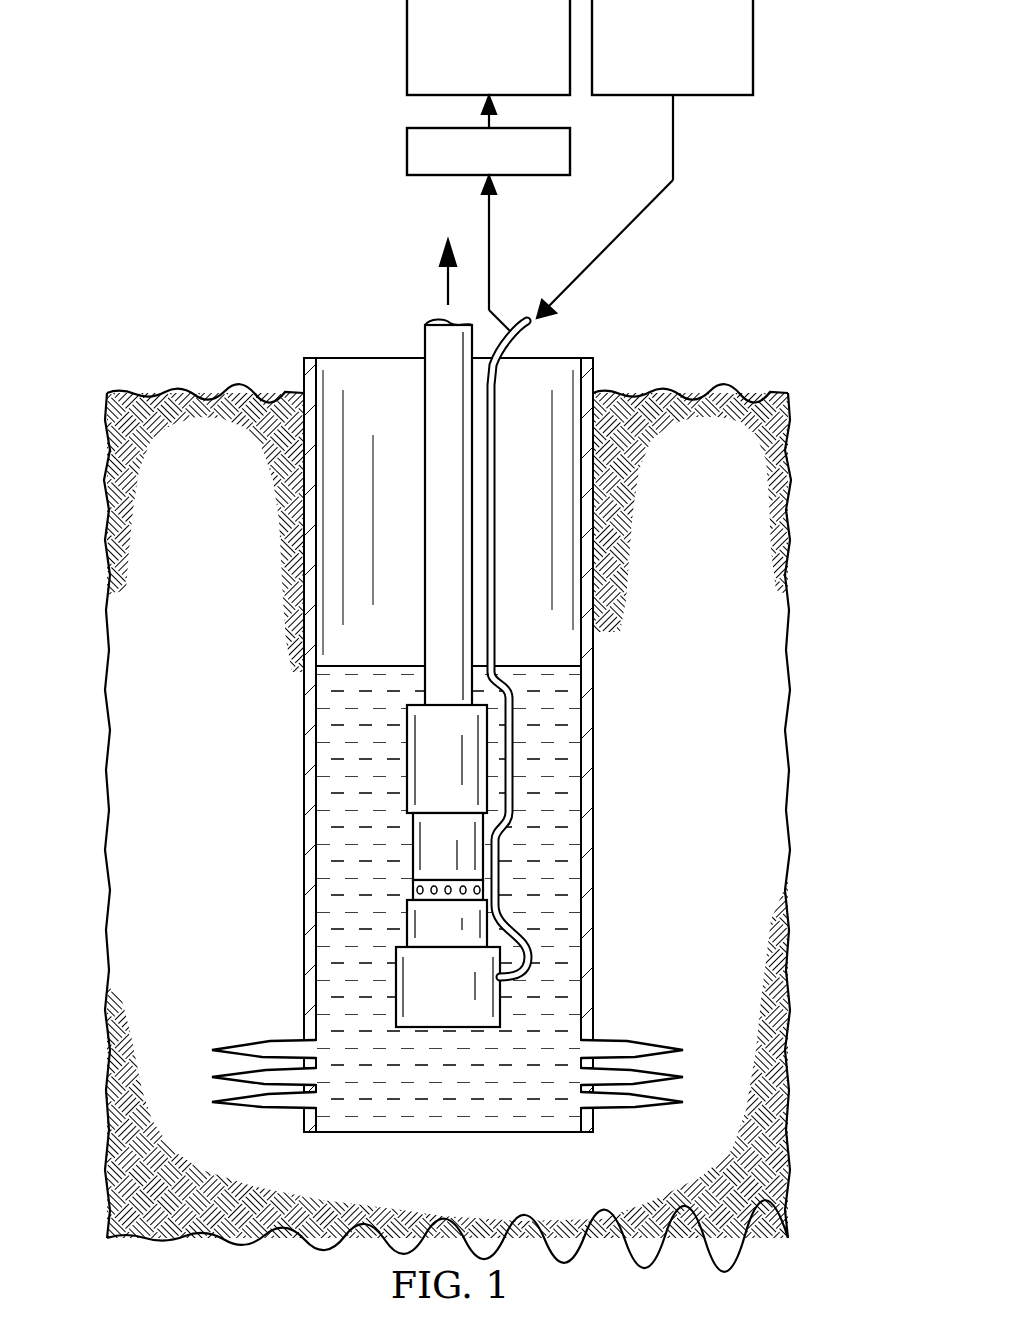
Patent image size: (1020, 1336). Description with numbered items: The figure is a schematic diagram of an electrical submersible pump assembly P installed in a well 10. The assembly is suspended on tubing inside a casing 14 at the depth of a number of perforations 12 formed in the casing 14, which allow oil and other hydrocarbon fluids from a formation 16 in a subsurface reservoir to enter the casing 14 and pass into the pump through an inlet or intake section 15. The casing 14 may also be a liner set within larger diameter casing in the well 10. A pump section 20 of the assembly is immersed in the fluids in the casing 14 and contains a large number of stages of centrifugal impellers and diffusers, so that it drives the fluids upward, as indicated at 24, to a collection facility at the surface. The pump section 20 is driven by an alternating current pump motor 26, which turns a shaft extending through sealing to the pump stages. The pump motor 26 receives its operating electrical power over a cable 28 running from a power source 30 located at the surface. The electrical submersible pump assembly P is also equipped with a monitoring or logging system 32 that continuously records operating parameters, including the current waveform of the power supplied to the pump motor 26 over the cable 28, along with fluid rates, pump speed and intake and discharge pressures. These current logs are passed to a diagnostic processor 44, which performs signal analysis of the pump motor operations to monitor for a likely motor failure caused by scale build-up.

The well 10 is at (362, 357).
The perforations 12 is at (258, 1040).
The casing 14 is at (594, 663).
The intake section 15 is at (413, 890).
The formation 16 is at (112, 725).
The pump section 20 is at (407, 762).
The pumped fluid flow 24 is at (438, 278).
The pump motor 26 is at (396, 974).
The cable 28 is at (673, 138).
The power source 30 is at (753, 42).
The monitoring or logging system 32 is at (407, 150).
The diagnostic processor 44 is at (407, 42).
The electrical submersible pump assembly P is at (647, 349).